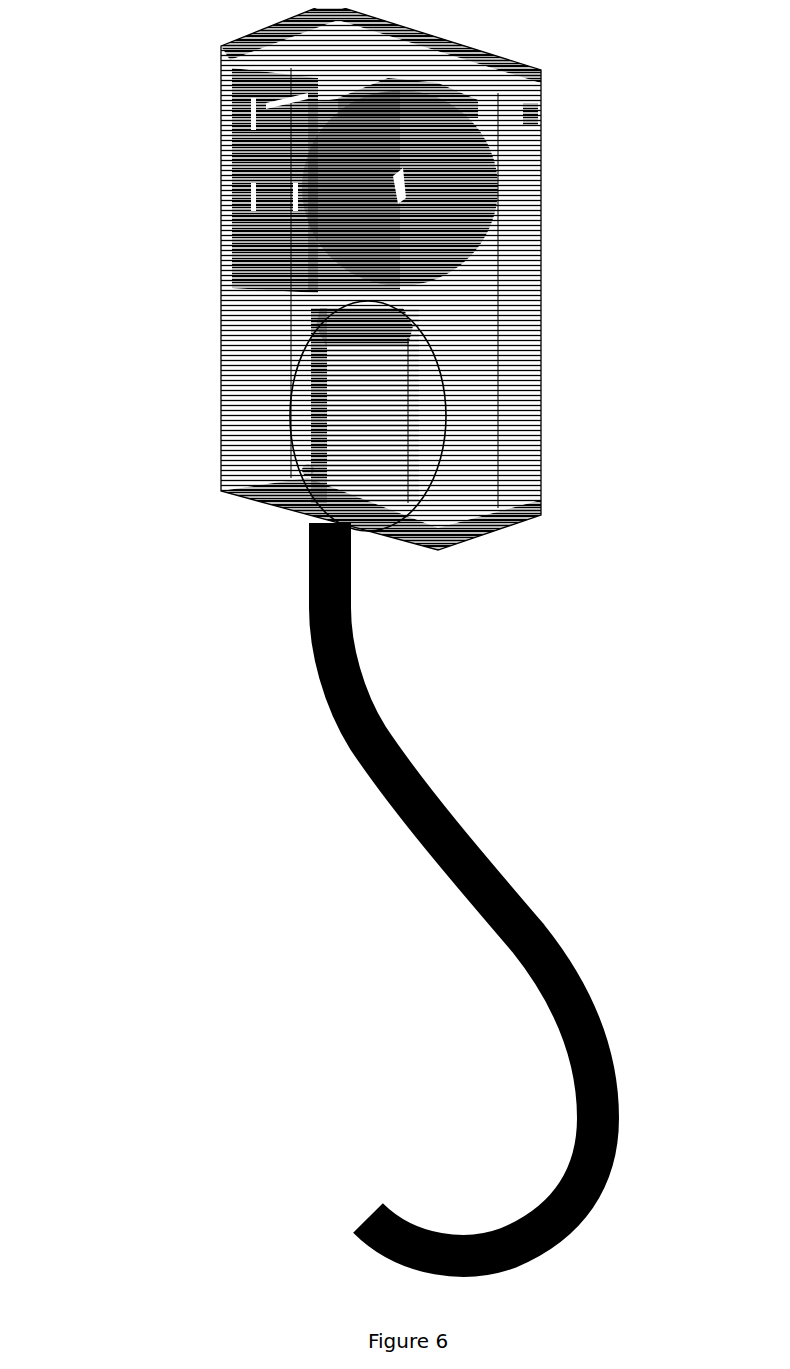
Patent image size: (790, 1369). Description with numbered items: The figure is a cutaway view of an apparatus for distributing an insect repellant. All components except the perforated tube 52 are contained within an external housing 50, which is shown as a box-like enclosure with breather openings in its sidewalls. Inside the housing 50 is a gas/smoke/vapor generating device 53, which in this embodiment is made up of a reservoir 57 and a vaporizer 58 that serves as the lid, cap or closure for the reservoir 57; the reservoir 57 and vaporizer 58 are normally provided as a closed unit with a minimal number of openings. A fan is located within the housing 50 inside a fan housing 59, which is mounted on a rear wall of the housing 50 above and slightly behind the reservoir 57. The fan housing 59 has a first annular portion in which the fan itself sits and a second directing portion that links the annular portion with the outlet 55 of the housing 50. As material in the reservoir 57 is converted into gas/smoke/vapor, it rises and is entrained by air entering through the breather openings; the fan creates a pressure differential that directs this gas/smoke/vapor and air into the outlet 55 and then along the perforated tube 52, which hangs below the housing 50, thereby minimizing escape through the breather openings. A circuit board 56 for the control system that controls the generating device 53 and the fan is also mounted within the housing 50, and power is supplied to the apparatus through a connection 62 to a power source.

The external housing 50 is at (222, 390).
The perforated tube 52 is at (345, 673).
The gas/smoke/vapor generating device 53 is at (430, 468).
The outlet 55 is at (300, 462).
The circuit board 56 is at (300, 134).
The reservoir 57 is at (380, 408).
The vaporizer 58 is at (375, 334).
The fan housing 59 is at (455, 192).
The connection 62 is at (545, 107).